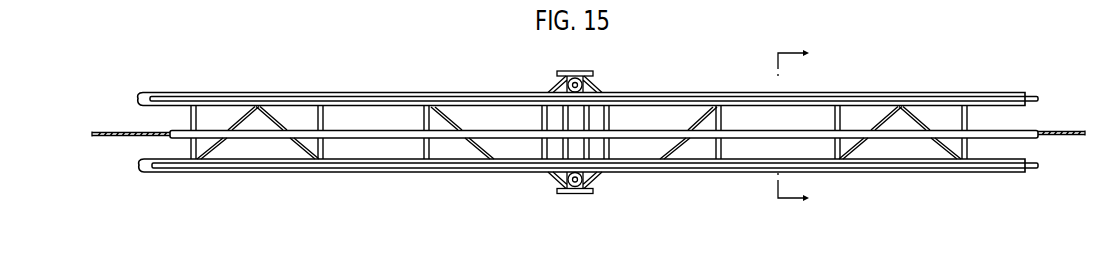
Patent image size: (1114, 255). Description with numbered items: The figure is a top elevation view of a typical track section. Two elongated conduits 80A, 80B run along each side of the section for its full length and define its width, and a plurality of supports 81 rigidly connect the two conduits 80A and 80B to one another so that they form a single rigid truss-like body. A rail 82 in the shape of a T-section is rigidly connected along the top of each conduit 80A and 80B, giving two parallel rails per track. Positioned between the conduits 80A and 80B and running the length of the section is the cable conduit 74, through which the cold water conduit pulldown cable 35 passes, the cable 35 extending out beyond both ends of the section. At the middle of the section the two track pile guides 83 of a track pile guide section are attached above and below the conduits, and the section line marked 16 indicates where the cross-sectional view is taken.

The conduit 80A is at (147, 92).
The conduit 80B is at (147, 172).
The rail 82 is at (207, 96).
The cable conduit 74 is at (368, 130).
The supports 81 is at (325, 143).
The track pile guides 83 is at (592, 82).
The cold water conduit pulldown cable 35 is at (118, 136).
The section line 16- 16 is at (806, 126).